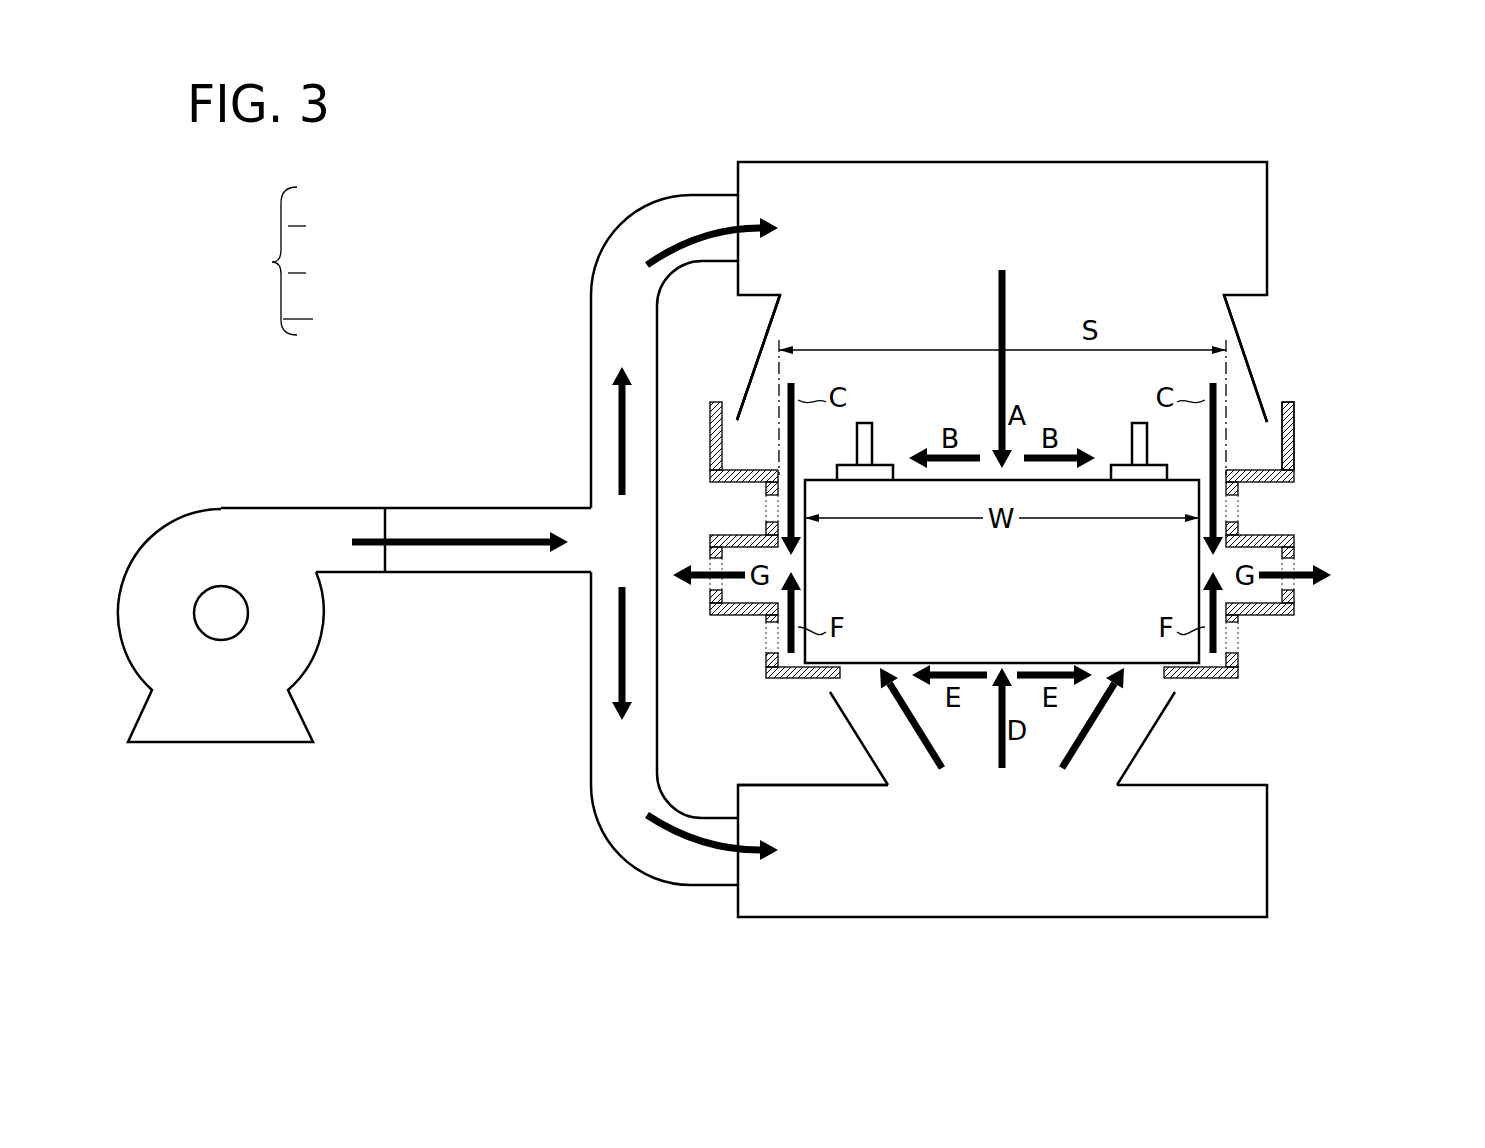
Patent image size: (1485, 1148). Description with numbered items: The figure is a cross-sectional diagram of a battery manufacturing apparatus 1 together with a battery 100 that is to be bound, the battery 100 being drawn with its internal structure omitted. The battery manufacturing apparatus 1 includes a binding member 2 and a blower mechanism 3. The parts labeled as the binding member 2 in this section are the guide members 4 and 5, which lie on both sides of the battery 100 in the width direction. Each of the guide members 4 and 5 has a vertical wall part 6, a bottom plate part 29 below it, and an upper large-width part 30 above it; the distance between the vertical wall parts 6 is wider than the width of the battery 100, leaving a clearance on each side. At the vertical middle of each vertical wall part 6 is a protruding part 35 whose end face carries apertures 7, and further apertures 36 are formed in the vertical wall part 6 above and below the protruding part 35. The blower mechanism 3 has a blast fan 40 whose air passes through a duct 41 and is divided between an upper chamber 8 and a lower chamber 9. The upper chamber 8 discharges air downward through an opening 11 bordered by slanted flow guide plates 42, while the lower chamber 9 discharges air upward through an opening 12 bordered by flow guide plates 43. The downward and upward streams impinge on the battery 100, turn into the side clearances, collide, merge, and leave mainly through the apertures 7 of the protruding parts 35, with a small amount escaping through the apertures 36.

The battery manufacturing apparatus 1 is at (1375, 243).
The binding member 2 is at (1002, 543).
The blower mechanism 3 is at (277, 261).
The guide member 4 is at (1001, 436).
The guide member 5 is at (1295, 405).
The vertical wall part 6 is at (766, 490).
The aperture 7 is at (710, 583).
The upper chamber 8 is at (1267, 197).
The lower chamber 9 is at (1267, 858).
The opening 11 is at (845, 315).
The opening 12 is at (905, 775).
The bottom plate part 29 is at (790, 680).
The upper large-width part 30 is at (710, 445).
The protruding part 35 is at (710, 548).
The aperture 36 is at (766, 522).
The blast fan 40 is at (228, 515).
The duct 41 is at (440, 515).
The flow guide plate 42 is at (757, 358).
The flow guide plate 43 is at (839, 717).
The battery 100 is at (980, 598).